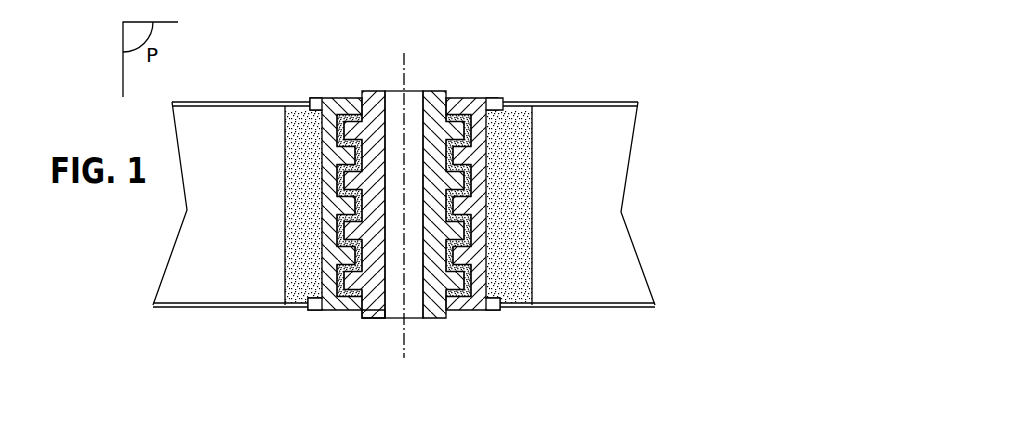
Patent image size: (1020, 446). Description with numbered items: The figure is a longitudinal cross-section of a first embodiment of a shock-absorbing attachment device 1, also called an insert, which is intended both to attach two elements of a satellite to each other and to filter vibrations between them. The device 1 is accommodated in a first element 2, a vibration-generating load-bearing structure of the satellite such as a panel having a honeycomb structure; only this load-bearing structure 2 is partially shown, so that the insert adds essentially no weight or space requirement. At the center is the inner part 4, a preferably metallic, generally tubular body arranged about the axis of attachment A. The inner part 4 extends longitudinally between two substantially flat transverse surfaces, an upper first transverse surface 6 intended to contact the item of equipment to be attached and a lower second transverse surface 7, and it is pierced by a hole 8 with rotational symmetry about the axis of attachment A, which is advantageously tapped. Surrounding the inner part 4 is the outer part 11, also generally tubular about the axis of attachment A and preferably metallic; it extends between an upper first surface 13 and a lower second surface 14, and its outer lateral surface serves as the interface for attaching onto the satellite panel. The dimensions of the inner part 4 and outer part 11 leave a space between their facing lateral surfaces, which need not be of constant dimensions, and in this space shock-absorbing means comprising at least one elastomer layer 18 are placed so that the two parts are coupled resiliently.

The shock-absorbing attachment device 1 is at (436, 192).
The first element 2 is at (612, 142).
The inner part 4 is at (473, 205).
The first transverse surface 6 is at (404, 212).
The second transverse surface 7 is at (372, 320).
The hole 8 is at (415, 322).
The outer part 11 is at (511, 99).
The first transverse surface of the outer part 13 is at (329, 206).
The second transverse surface of the outer part 14 is at (328, 310).
The elastomer layer 18 is at (471, 322).
The axis of attachment A is at (408, 67).